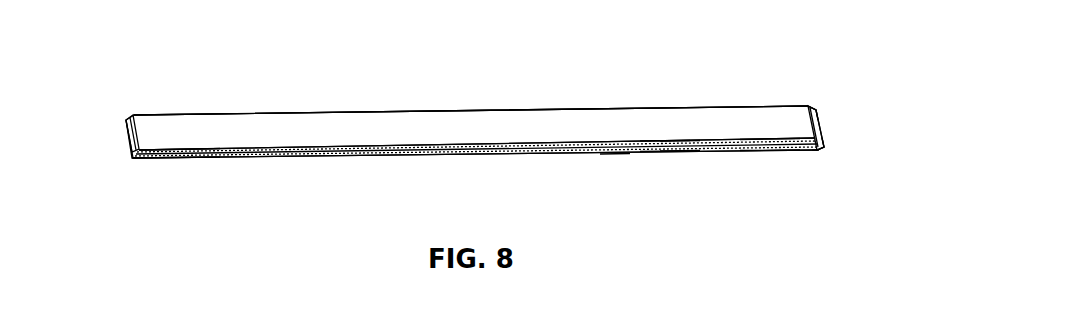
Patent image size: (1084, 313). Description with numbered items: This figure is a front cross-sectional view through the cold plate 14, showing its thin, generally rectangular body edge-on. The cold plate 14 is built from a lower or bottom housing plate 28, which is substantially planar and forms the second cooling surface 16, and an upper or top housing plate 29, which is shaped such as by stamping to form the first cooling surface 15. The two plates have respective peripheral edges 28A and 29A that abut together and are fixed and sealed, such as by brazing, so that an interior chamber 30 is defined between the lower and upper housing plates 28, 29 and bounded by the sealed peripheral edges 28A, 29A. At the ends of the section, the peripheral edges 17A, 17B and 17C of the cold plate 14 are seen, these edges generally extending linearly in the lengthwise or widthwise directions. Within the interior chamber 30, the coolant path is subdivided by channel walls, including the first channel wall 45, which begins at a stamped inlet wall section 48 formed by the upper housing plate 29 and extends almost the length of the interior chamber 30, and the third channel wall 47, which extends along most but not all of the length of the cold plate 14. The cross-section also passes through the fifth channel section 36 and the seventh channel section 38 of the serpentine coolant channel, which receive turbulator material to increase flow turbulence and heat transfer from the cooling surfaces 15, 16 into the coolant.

The cold plate 14 is at (752, 61).
The first cooling surface 15 is at (655, 113).
The second cooling surface 16 is at (675, 152).
The peripheral edge 17A is at (823, 138).
The peripheral edge 17B is at (127, 122).
The peripheral edge 17C is at (128, 148).
The lower housing plate 28 is at (302, 157).
The peripheral edge of lower housing plate 28A is at (820, 150).
The upper housing plate 29 is at (423, 118).
The peripheral edge of upper housing plate 29A is at (810, 112).
The interior chamber 30 is at (613, 150).
The fifth channel section 36 is at (388, 155).
The seventh channel section 38 is at (662, 147).
The first channel wall 45 is at (768, 153).
The third channel wall 47 is at (188, 153).
The inlet wall section 48 is at (460, 155).